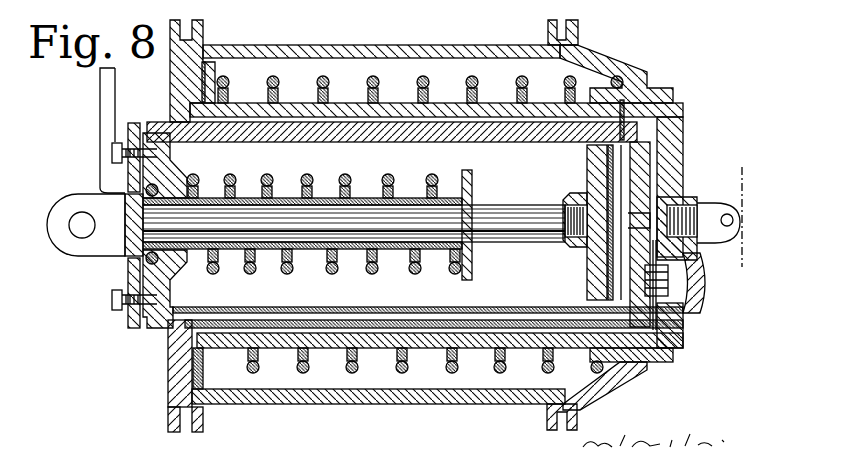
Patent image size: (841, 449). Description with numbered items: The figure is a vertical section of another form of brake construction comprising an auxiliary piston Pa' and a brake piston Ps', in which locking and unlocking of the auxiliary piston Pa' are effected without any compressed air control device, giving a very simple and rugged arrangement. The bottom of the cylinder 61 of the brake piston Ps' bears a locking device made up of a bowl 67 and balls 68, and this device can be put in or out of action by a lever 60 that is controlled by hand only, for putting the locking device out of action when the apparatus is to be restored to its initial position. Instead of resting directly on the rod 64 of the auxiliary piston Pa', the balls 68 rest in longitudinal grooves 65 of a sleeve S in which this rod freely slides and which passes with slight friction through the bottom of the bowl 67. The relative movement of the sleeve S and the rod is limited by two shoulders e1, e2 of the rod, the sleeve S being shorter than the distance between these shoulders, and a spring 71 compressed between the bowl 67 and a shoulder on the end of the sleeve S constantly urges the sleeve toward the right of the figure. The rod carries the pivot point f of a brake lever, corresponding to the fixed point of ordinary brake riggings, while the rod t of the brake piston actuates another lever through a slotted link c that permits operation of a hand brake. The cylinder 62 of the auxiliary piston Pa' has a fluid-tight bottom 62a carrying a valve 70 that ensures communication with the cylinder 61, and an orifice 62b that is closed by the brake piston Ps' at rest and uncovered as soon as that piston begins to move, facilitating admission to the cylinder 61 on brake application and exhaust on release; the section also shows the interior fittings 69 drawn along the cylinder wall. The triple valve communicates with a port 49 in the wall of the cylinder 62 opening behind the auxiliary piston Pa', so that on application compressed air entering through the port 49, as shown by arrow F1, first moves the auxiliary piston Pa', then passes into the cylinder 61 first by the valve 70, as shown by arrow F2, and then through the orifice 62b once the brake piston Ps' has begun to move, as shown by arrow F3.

The lever 60 is at (102, 100).
The cylinder of piston ps' 61 is at (412, 53).
The cylinder of piston pa' 62 is at (318, 130).
The fluid-tight bottom 62a is at (640, 148).
The orifice 62b is at (657, 197).
The shaft 64 is at (402, 220).
The longitudinal grooves 65 is at (278, 197).
The bowl 67 is at (172, 230).
The balls 68 is at (147, 262).
The pegs 69 is at (273, 80).
The valve 70 is at (707, 305).
The spring 71 is at (333, 272).
The port 49 is at (381, 319).
The brake piston Ps' is at (227, 51).
The auxiliary piston Pa' is at (616, 88).
The sleeve S is at (472, 198).
The shoulder e1 is at (126, 200).
The shoulder e2 is at (563, 194).
The pivot point f is at (77, 236).
The slotted link c is at (728, 214).
The rod t is at (703, 216).
The arrow F1 is at (248, 307).
The arrow F2 is at (682, 348).
The arrow F3 is at (639, 221).